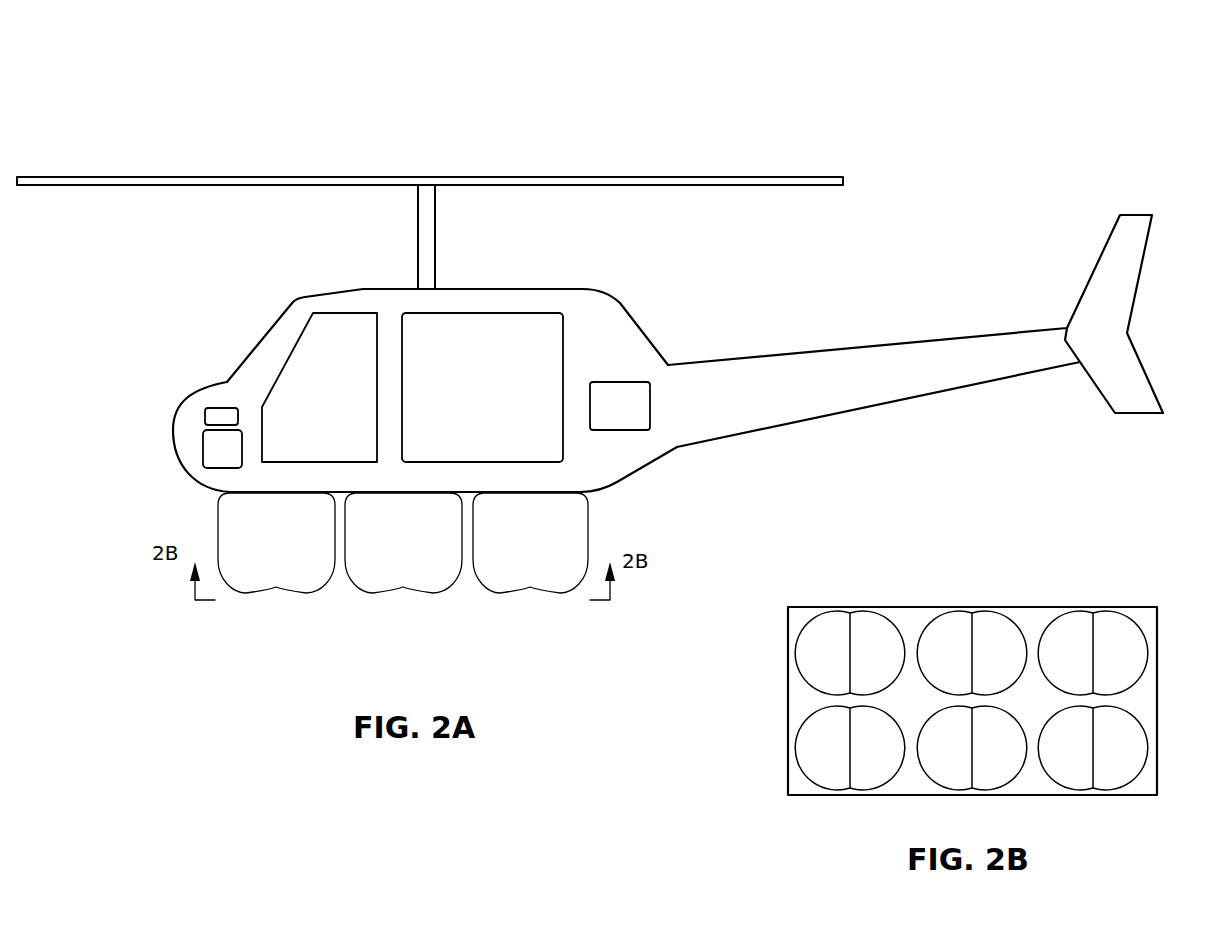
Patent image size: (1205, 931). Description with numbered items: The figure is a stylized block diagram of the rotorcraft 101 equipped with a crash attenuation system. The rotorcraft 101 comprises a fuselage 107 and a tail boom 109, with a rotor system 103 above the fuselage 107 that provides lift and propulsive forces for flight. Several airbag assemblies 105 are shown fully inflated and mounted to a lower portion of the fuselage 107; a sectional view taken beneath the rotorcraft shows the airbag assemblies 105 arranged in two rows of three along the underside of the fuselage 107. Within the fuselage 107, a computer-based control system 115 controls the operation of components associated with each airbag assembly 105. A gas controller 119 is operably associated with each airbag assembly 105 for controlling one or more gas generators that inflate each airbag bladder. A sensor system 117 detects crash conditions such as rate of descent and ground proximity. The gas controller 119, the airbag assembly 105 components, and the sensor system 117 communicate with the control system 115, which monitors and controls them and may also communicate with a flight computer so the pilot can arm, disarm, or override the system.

In FIG. 2A, the rotorcraft 101 is at (133, 110).
In FIG. 2A, the rotor system 103 is at (358, 177).
In FIG. 2A, the airbag assembly 105 is at (230, 607).
In FIG. 2B, the airbag assembly 105 is at (1046, 787).
In FIG. 2A, the fuselage 107 is at (607, 297).
In FIG. 2B, the fuselage 107 is at (1078, 607).
In FIG. 2A, the tail boom 109 is at (873, 412).
In FIG. 2A, the control system 115 is at (203, 445).
In FIG. 2A, the sensor system 117 is at (205, 414).
In FIG. 2A, the gas controller 119 is at (640, 430).